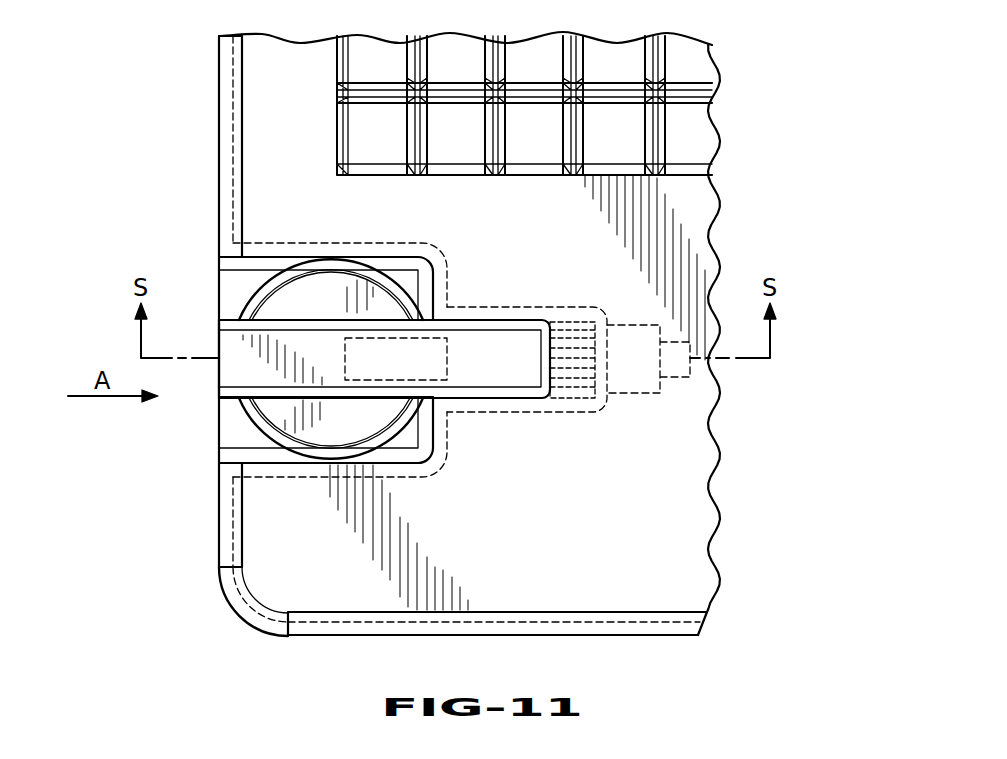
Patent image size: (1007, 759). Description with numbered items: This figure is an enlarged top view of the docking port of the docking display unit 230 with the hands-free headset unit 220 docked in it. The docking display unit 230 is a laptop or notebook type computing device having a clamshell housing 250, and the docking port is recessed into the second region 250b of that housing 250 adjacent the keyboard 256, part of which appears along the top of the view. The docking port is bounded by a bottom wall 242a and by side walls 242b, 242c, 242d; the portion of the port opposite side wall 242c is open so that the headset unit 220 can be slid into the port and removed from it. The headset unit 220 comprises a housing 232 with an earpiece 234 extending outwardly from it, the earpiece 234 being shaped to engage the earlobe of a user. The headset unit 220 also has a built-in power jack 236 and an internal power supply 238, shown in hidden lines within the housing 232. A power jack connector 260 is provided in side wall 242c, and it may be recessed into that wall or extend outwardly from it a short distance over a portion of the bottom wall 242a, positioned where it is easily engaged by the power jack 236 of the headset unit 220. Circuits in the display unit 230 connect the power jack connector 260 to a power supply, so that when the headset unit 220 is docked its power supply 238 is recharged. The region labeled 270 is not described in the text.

The headset unit 220 is at (225, 375).
The docking display unit 230 is at (200, 75).
The housing 232 is at (370, 330).
The earpiece 234 is at (330, 266).
The power jack 236 is at (563, 327).
The power supply 238 is at (433, 367).
The bottom wall 242a is at (228, 290).
The side wall 242b is at (287, 257).
The side wall 242c is at (595, 372).
The side wall 242d is at (287, 465).
The housing 250 is at (653, 638).
The second region 250b is at (655, 514).
The keyboard 256 is at (708, 50).
The power jack connector 260 is at (635, 375).
The mounting region 270 is at (526, 229).